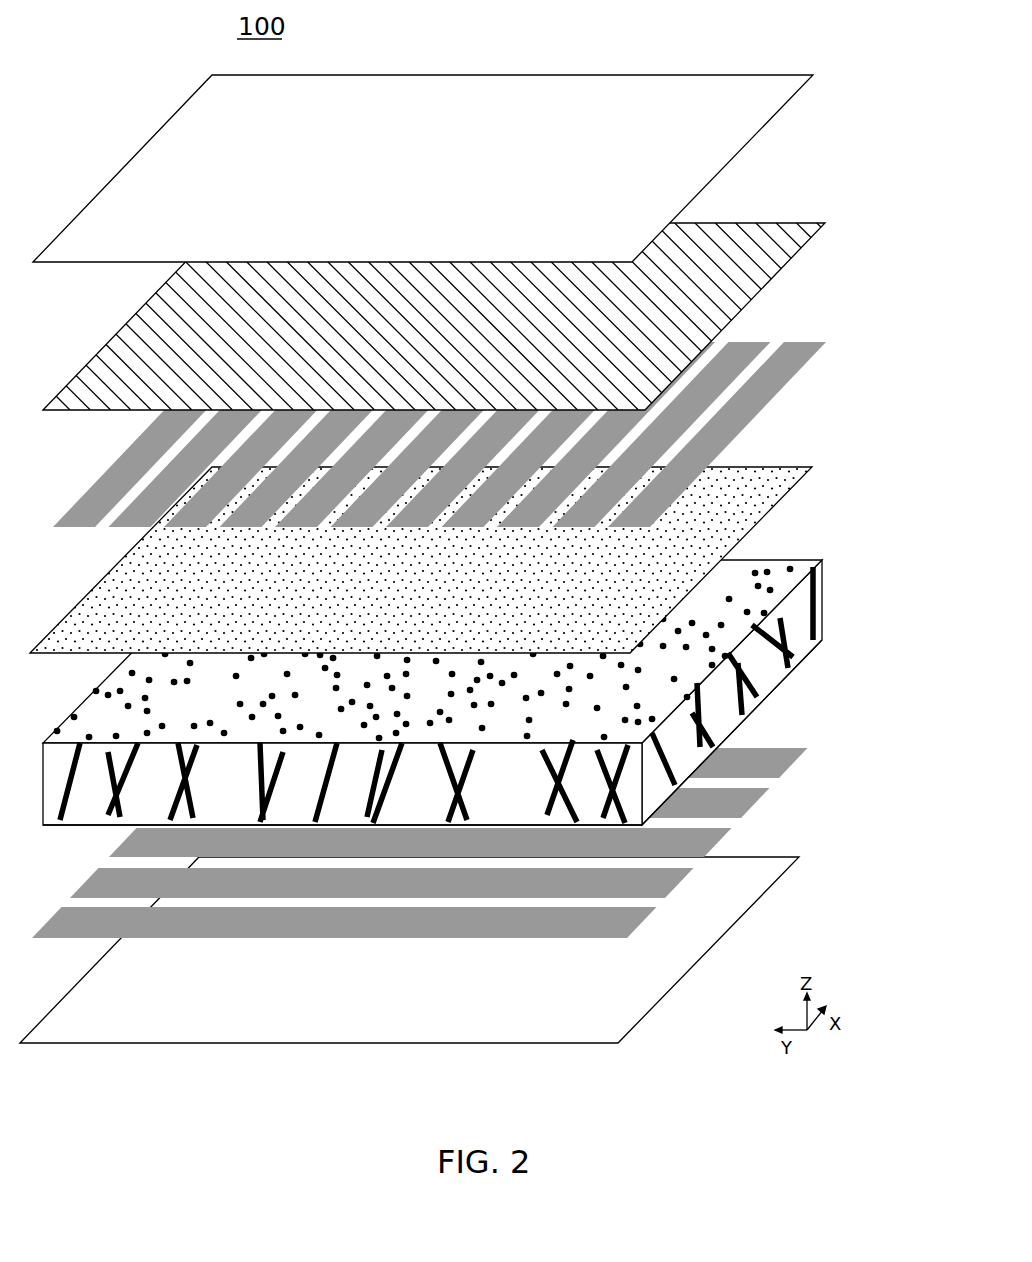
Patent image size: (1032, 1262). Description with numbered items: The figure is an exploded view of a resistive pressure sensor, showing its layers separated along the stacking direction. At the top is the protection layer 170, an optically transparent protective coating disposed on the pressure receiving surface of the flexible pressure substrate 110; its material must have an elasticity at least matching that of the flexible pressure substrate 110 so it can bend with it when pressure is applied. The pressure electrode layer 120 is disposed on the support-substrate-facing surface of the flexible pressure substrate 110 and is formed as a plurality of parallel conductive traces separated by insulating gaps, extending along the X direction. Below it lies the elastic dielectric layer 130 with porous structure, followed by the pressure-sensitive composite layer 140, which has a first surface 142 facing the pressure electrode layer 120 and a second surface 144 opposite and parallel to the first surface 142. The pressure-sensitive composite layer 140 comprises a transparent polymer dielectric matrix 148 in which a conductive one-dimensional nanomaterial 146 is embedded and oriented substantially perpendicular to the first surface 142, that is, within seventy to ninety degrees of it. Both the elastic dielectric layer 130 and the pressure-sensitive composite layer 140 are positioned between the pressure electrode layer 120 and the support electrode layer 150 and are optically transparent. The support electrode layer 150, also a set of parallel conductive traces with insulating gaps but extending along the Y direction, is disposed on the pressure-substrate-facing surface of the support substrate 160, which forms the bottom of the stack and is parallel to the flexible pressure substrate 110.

The flexible pressure substrate 110 is at (787, 268).
The pressure electrode layer 120 is at (787, 384).
The elastic dielectric layer 130 is at (783, 502).
The pressure-sensitive composite layer 140 is at (492, 687).
The first surface 142 is at (822, 563).
The second surface 144 is at (783, 682).
The conductive one-dimensional nanomaterial 146 is at (785, 640).
The transparent polymer dielectric matrix 148 is at (718, 728).
The support electrode layer 150 is at (775, 797).
The support substrate 160 is at (730, 941).
The protection layer 170 is at (790, 102).